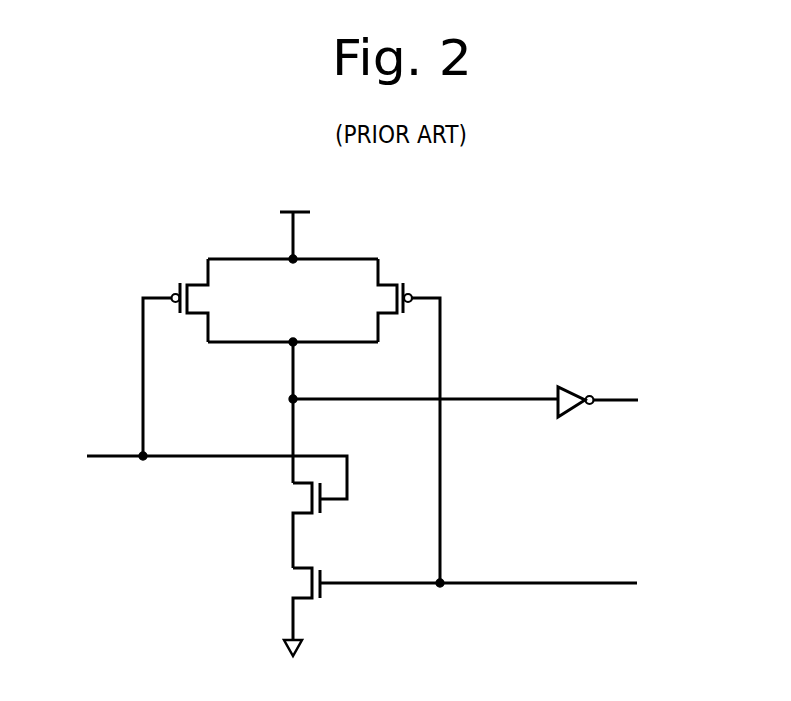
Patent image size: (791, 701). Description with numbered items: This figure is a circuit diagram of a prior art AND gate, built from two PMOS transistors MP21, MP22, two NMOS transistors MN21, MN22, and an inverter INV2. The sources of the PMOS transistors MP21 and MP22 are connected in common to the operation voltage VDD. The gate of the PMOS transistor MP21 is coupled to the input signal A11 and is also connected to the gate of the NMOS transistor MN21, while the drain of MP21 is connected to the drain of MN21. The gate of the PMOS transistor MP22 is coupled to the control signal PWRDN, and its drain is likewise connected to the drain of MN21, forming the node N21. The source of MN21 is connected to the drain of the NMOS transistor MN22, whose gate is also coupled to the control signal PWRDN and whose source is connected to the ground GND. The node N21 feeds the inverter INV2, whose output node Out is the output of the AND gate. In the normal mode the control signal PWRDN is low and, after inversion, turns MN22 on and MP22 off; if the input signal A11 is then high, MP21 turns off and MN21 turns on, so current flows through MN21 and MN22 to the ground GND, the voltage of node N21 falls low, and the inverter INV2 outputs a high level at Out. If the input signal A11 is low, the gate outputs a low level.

The operation voltage VDD is at (294, 222).
The PMOS transistor MP21 is at (200, 357).
The PMOS transistor MP22 is at (385, 421).
The node N21 is at (423, 412).
The inverter INV2 is at (593, 387).
The output node Out is at (663, 403).
The input signal A11 is at (194, 470).
The NMOS transistor MN21 is at (280, 525).
The NMOS transistor MN22 is at (280, 604).
The control signal PWRDN is at (513, 584).
The ground GND is at (290, 663).